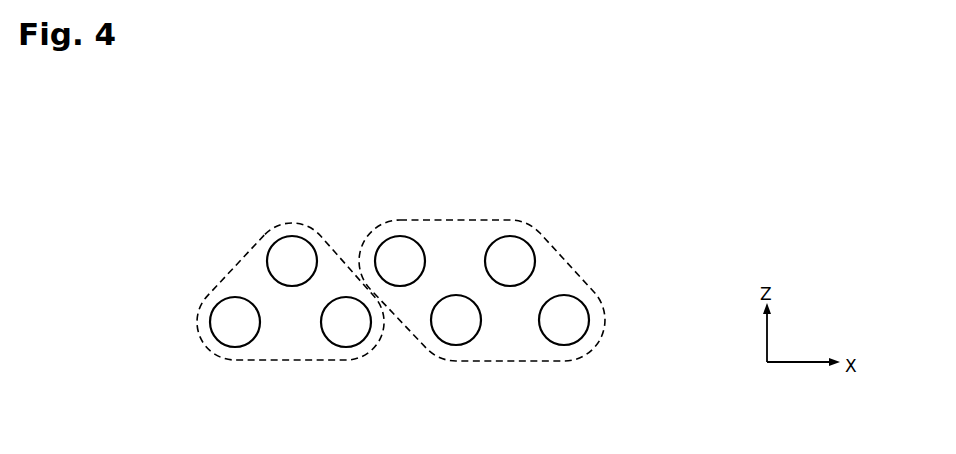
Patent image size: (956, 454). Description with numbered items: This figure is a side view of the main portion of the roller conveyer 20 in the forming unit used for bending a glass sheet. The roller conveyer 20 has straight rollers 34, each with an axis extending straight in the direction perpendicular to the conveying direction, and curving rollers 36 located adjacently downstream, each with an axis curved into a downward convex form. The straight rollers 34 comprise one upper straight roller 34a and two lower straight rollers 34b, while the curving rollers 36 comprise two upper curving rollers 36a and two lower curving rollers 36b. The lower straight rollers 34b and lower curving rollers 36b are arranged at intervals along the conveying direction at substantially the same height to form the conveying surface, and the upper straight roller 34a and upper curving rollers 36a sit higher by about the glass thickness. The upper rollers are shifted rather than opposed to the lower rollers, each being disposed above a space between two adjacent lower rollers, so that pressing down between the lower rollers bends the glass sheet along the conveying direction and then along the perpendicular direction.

The roller conveyer 20 is at (451, 185).
The straight roller 34 is at (237, 265).
The upper straight roller 34a is at (293, 236).
The lower straight roller 34b is at (210, 322).
The curving roller 36 is at (570, 261).
The upper curving roller 36a is at (403, 236).
The lower curving roller 36b is at (457, 345).